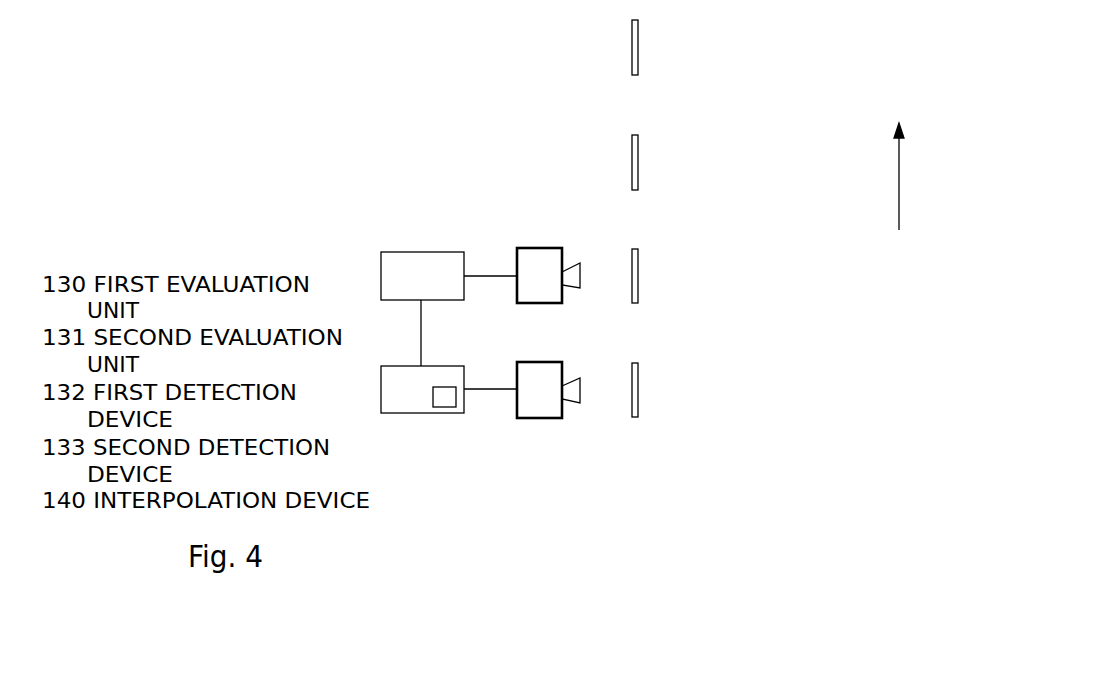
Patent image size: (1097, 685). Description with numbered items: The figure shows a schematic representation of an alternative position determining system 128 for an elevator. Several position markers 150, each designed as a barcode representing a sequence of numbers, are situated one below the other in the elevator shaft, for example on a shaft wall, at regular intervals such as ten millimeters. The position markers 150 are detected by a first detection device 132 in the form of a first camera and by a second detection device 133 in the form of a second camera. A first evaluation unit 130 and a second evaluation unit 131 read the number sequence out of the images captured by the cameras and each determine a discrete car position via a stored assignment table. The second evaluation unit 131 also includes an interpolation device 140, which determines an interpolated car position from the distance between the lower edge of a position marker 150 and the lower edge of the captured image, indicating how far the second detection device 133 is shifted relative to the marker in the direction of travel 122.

The direction of travel 122 is at (923, 176).
The position determining system 128 is at (318, 252).
The first evaluation unit 130 is at (422, 250).
The second evaluation unit 131 is at (422, 414).
The first detection device 132 is at (539, 247).
The second detection device 133 is at (538, 419).
The interpolation device 140 is at (445, 407).
The position marker 150 is at (638, 43).